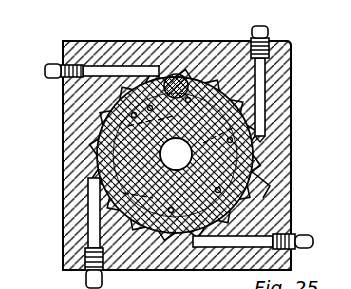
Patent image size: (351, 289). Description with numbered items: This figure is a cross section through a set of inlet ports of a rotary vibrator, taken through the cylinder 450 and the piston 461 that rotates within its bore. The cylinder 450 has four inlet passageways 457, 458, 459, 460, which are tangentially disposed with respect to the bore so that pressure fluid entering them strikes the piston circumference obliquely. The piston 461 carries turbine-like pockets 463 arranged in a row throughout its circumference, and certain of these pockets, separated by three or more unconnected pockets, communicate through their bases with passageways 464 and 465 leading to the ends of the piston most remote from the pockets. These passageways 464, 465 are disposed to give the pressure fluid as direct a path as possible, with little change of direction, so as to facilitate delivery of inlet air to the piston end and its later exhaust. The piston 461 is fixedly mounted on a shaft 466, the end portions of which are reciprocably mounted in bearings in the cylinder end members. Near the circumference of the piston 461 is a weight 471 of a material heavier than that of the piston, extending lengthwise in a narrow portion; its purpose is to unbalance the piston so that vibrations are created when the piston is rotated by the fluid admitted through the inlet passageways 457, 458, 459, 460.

The cylinder 450 is at (284, 156).
The inlet passageway 457 is at (96, 50).
The inlet passageway 458 is at (253, 80).
The inlet passageway 459 is at (280, 208).
The inlet passageway 460 is at (82, 216).
The piston 461 is at (255, 128).
The turbine-like pocket 463 is at (272, 166).
The passageway 464 is at (131, 109).
The passageway 465 is at (147, 185).
The shaft 466 is at (80, 178).
The weight 471 is at (178, 53).